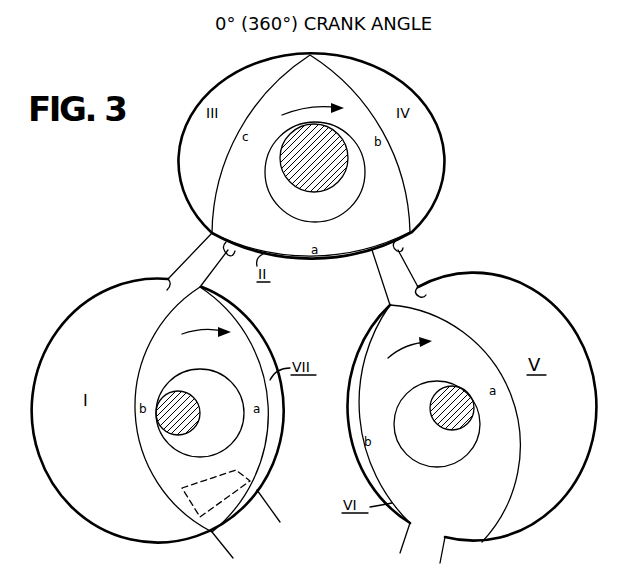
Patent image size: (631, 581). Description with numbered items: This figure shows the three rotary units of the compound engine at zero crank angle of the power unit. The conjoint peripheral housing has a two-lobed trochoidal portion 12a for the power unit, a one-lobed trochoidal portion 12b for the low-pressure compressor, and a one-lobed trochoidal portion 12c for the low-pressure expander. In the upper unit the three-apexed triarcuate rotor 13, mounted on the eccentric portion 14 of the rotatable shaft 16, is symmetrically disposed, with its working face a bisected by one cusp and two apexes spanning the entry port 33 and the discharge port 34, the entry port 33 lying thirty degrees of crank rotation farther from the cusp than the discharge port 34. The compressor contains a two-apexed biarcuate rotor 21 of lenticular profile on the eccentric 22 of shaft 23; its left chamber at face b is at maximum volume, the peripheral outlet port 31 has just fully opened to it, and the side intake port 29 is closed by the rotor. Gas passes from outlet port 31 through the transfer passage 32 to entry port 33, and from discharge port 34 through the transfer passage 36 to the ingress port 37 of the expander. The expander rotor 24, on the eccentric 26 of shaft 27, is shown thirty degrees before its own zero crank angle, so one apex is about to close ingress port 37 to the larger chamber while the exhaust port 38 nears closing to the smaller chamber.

The two-lobed trochoidal housing portion 12a is at (223, 80).
The one-lobed trochoidal housing portion 12b is at (127, 289).
The one-lobed trochoidal housing portion 12c is at (547, 298).
The three-apexed triarcuate rotor 13 is at (388, 231).
The eccentric portion 14 is at (334, 213).
The rotatable shaft 16 is at (324, 166).
The two-apexed biarcuate rotor 21 is at (204, 363).
The eccentric 22 is at (230, 422).
The shaft 23 is at (188, 422).
The second two-apexed biarcuate rotor 24 is at (419, 384).
The eccentric 26 is at (434, 450).
The shaft 27 is at (463, 417).
The intake port 29 is at (202, 483).
The peripheral outlet port 31 is at (171, 282).
The transfer passage 32 is at (210, 271).
The entry port 33 is at (235, 261).
The discharge port 34 is at (403, 250).
The transfer passage 36 is at (402, 287).
The ingress port 37 is at (424, 292).
The exhaust port 38 is at (432, 557).